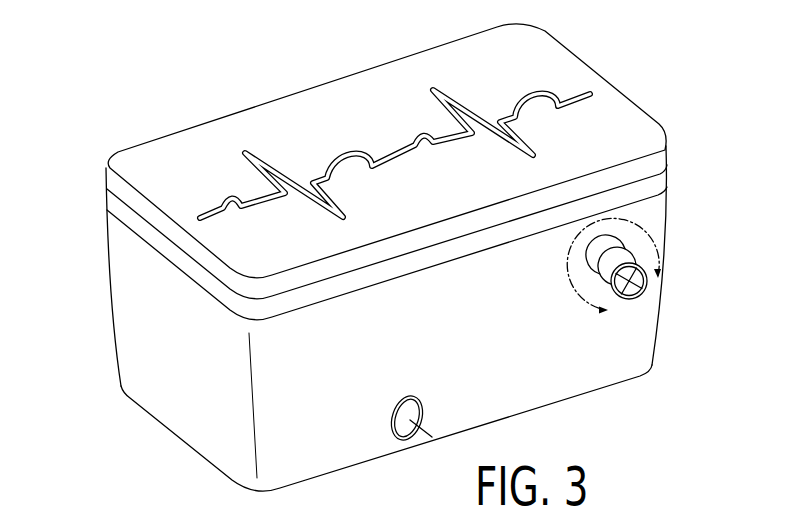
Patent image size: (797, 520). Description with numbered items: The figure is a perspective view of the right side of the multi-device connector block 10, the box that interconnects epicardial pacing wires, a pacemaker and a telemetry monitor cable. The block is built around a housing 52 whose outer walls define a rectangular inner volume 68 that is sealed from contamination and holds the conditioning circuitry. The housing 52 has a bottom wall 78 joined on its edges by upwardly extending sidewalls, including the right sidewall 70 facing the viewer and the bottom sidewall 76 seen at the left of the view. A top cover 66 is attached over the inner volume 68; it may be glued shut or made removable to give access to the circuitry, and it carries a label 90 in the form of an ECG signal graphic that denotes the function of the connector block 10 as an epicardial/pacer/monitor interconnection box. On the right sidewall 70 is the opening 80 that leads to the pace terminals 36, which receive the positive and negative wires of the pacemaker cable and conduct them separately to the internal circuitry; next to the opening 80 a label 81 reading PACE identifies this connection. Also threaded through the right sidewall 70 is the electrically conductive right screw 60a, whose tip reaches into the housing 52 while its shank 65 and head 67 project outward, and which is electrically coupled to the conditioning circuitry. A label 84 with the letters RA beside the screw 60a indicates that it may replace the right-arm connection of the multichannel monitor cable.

The multi-device connector block 10 is at (651, 71).
The pace terminals 36 is at (416, 419).
The housing 52 is at (78, 269).
The right screw 60a is at (604, 271).
The shank 65 is at (607, 285).
The top cover 66 is at (352, 106).
The head 67 is at (645, 279).
The inner volume 68 is at (85, 214).
The right sidewall 70 is at (365, 351).
The bottom sidewall 76 is at (184, 342).
The bottom wall 78 is at (567, 415).
The opening 80 is at (398, 436).
The label 81 is at (296, 456).
The label 84 is at (541, 298).
The label 90 is at (258, 172).